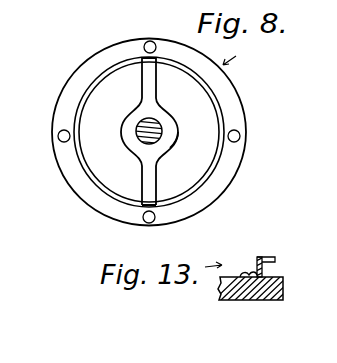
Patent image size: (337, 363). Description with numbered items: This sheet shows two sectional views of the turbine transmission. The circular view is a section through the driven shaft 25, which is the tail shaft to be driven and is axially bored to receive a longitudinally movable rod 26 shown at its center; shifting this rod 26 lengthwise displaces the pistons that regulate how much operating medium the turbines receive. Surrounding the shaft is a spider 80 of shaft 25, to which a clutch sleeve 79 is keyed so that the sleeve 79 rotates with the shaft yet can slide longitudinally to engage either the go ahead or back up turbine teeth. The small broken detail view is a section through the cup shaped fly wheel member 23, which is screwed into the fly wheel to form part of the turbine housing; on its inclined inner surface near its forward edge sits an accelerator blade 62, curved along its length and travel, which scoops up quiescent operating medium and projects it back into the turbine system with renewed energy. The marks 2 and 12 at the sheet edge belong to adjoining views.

In FIG. 8, the spider 80 is at (148, 87).
In FIG. 8, the clutch sleeve 79 is at (200, 72).
In FIG. 8, the longitudinally movable rod 26 is at (141, 142).
In FIG. 8, the shaft to be driven 25 is at (181, 148).
In FIG. 8, the partial numeral at page edge 2 is at (327, 68).
In FIG. 8, the partial numeral at page edge 12 is at (336, 222).
In FIG. 13, the cup shaped member 23 is at (218, 295).
In FIG. 13, the accelerator blades 62 is at (265, 268).